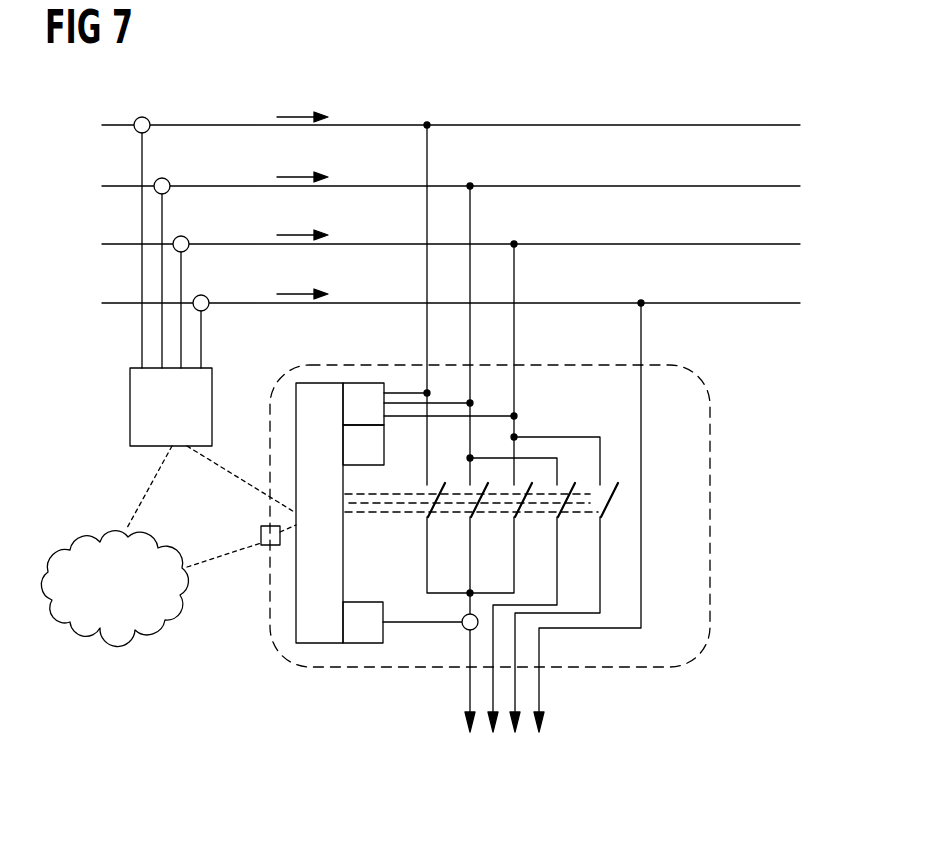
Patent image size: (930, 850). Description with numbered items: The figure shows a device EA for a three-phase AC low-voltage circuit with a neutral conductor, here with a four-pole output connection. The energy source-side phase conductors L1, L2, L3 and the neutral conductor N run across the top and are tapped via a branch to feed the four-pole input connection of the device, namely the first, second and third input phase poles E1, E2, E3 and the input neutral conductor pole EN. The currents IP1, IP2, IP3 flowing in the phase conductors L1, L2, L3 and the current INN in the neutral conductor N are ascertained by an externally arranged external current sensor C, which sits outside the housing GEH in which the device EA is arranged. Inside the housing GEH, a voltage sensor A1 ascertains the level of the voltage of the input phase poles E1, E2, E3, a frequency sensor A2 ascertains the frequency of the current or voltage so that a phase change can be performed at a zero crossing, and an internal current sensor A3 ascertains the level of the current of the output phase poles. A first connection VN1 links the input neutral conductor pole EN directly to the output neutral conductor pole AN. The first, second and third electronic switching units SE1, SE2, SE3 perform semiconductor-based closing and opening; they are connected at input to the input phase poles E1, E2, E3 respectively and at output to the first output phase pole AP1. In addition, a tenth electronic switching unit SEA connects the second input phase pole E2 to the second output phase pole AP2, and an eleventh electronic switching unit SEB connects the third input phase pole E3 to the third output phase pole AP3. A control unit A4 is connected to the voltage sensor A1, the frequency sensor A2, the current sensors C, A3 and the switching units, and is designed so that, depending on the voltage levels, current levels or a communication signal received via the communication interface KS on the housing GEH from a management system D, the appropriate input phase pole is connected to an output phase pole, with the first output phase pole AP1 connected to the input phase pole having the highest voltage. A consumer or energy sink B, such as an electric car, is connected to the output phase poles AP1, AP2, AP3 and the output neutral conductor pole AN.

The first energy source-side phase conductor L1 is at (434, 237).
The second energy source-side phase conductor L2 is at (434, 268).
The third energy source-side phase conductor L3 is at (434, 297).
The neutral conductor N is at (439, 327).
The current of the first phase conductor IP1 is at (302, 101).
The current of the second phase conductor IP2 is at (302, 158).
The current of the third phase conductor IP3 is at (302, 217).
The current of the neutral conductor INN is at (302, 277).
The external current sensor C is at (130, 403).
The management system D is at (118, 635).
The communication interface KS is at (247, 568).
The housing GEH is at (712, 495).
The device EA is at (372, 526).
The voltage sensor A1 is at (343, 408).
The frequency sensor A2 is at (343, 452).
The internal current sensor A3 is at (365, 643).
The control unit A4 is at (320, 643).
The first input phase pole E1 is at (413, 303).
The second input phase pole E2 is at (498, 334).
The third input phase pole E3 is at (541, 363).
The input neutral conductor pole EN is at (659, 332).
The first connection VN1 is at (641, 438).
The first electronic switching unit SE1 is at (430, 512).
The second electronic switching unit SE2 is at (472, 518).
The third electronic switching unit SE3 is at (516, 518).
The tenth electronic switching unit SEA is at (559, 518).
The eleventh electronic switching unit SEB is at (602, 518).
The first output phase pole AP1 is at (470, 708).
The second output phase pole AP2 is at (493, 680).
The third output phase pole AP3 is at (515, 680).
The output neutral conductor pole AN is at (540, 708).
The energy sink B is at (545, 763).